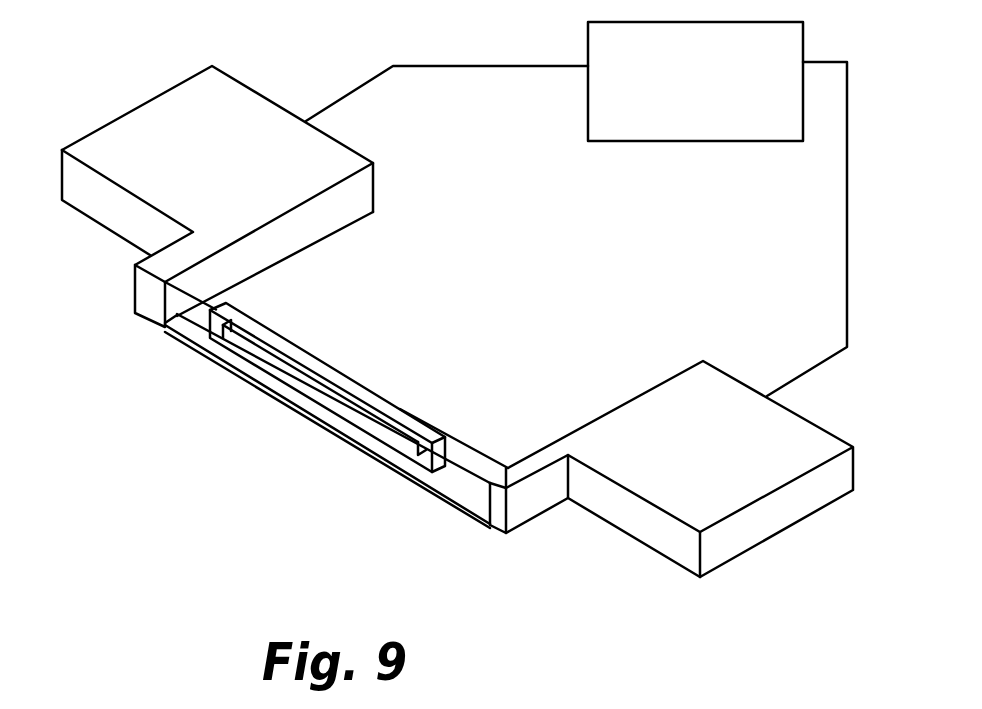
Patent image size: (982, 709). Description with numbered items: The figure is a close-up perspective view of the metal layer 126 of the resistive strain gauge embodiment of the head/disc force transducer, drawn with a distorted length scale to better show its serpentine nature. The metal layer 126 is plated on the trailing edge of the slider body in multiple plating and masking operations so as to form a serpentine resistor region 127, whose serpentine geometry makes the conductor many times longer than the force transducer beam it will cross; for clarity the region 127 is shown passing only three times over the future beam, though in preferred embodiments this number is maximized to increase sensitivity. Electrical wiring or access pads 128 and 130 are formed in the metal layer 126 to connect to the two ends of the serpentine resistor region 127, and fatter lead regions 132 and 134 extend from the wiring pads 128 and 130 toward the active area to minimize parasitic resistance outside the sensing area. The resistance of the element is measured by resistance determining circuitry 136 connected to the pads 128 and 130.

The metal layer 126 is at (197, 441).
The serpentine resistor region 127 is at (343, 380).
The electrical wiring pad 128 is at (333, 157).
The electrical wiring pad 130 is at (692, 382).
The lead region 132 is at (160, 268).
The lead region 134 is at (525, 497).
The resistance determining circuitry 136 is at (623, 142).